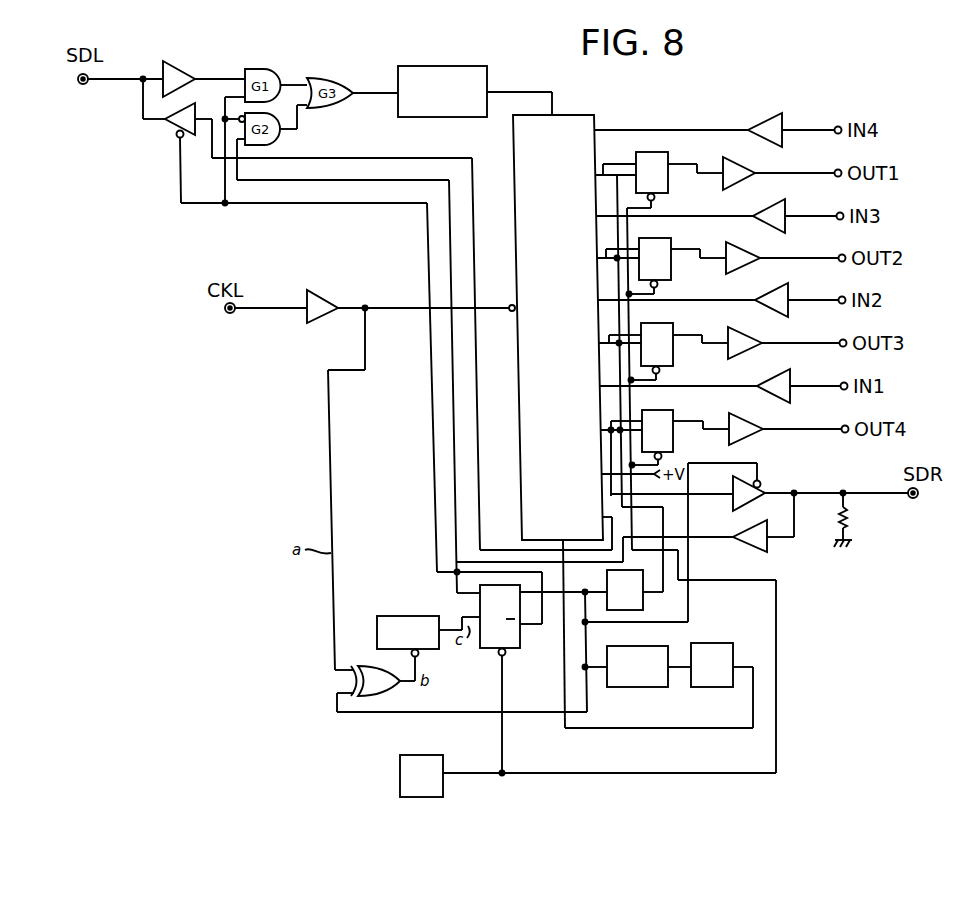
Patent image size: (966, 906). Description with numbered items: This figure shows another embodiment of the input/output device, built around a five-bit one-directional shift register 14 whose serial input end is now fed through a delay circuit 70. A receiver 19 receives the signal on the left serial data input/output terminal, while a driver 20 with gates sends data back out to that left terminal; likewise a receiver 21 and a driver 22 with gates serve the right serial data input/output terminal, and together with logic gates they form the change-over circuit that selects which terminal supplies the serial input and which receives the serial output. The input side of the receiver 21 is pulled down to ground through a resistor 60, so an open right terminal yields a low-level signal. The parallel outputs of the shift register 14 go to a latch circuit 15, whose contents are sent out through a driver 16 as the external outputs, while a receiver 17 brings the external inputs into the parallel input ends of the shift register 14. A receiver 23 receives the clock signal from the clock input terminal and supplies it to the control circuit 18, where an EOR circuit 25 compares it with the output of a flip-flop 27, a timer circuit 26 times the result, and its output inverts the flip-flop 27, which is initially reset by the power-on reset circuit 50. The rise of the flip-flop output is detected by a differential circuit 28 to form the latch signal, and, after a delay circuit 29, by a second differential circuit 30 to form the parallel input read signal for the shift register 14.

The shift register 14 is at (567, 113).
The latch circuit 15 is at (668, 156).
The driver 16 is at (743, 152).
The receiver 17 is at (783, 117).
The control circuit 18 is at (753, 638).
The receiver 19 is at (172, 61).
The driver with gates 20 is at (172, 127).
The receiver 21 is at (770, 547).
The driver with gates 22 is at (762, 480).
The receiver 23 is at (333, 276).
The EOR circuit 25 is at (372, 667).
The timer circuit 26 is at (387, 616).
The flip-flop 27 is at (513, 650).
The differential circuit 28 is at (644, 596).
The delay circuit 29 is at (640, 688).
The differential circuit 30 is at (717, 687).
The power-on reset circuit 50 is at (400, 770).
The resistor 60 is at (847, 517).
The delay circuit 70 is at (438, 67).